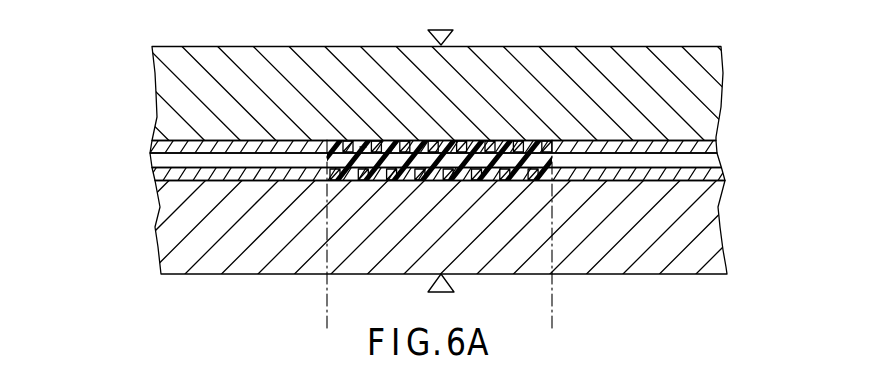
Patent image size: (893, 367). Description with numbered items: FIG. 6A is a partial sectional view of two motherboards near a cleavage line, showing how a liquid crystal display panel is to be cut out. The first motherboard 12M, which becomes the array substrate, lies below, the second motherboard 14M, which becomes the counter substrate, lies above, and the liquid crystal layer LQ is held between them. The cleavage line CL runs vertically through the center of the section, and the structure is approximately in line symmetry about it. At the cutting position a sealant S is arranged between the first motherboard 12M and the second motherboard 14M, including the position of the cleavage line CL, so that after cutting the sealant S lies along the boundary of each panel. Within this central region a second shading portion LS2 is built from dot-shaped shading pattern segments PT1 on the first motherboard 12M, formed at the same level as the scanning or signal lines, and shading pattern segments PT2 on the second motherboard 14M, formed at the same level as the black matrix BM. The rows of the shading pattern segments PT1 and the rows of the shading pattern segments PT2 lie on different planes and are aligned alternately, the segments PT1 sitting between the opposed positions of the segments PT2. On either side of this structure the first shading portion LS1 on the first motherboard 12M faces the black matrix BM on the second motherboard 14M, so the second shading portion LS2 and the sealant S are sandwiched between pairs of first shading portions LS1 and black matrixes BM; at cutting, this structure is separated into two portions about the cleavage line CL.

The second motherboard 14M is at (148, 92).
The first motherboard 12M is at (149, 222).
The liquid crystal layer LQ is at (158, 161).
The black matrix BM is at (232, 147).
The sealant S is at (363, 148).
The cleavage line CL is at (441, 147).
The shading pattern segments PT1 is at (525, 181).
The shading pattern segments PT2 is at (545, 142).
The first shading portion LS1 is at (231, 175).
The second shading portion LS2 is at (552, 212).